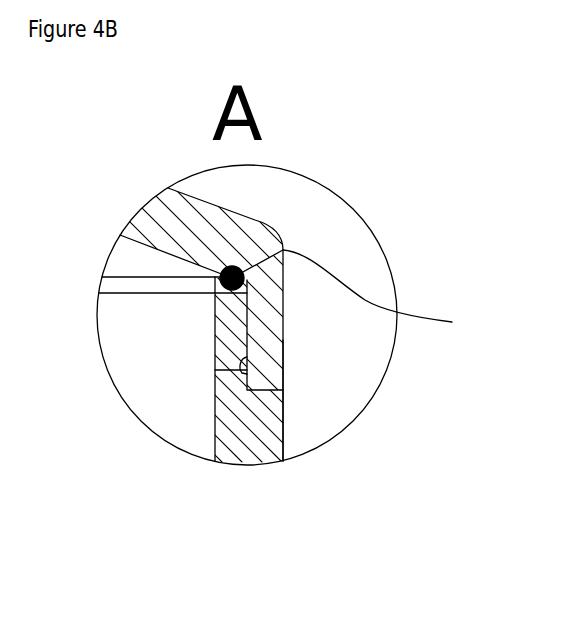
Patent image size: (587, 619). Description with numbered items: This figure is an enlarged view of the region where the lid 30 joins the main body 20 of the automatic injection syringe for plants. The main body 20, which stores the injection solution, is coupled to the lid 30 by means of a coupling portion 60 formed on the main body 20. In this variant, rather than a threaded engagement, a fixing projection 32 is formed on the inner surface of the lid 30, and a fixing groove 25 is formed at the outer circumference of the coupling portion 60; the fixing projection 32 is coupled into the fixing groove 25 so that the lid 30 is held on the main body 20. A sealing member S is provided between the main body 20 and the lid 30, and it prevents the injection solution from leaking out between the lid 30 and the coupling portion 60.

The lid 30 is at (210, 220).
The main body 20 is at (245, 448).
The fixing projection 32 is at (247, 378).
The fixing groove 25 is at (215, 370).
The coupling portion 60 is at (283, 340).
The sealing member S is at (393, 305).